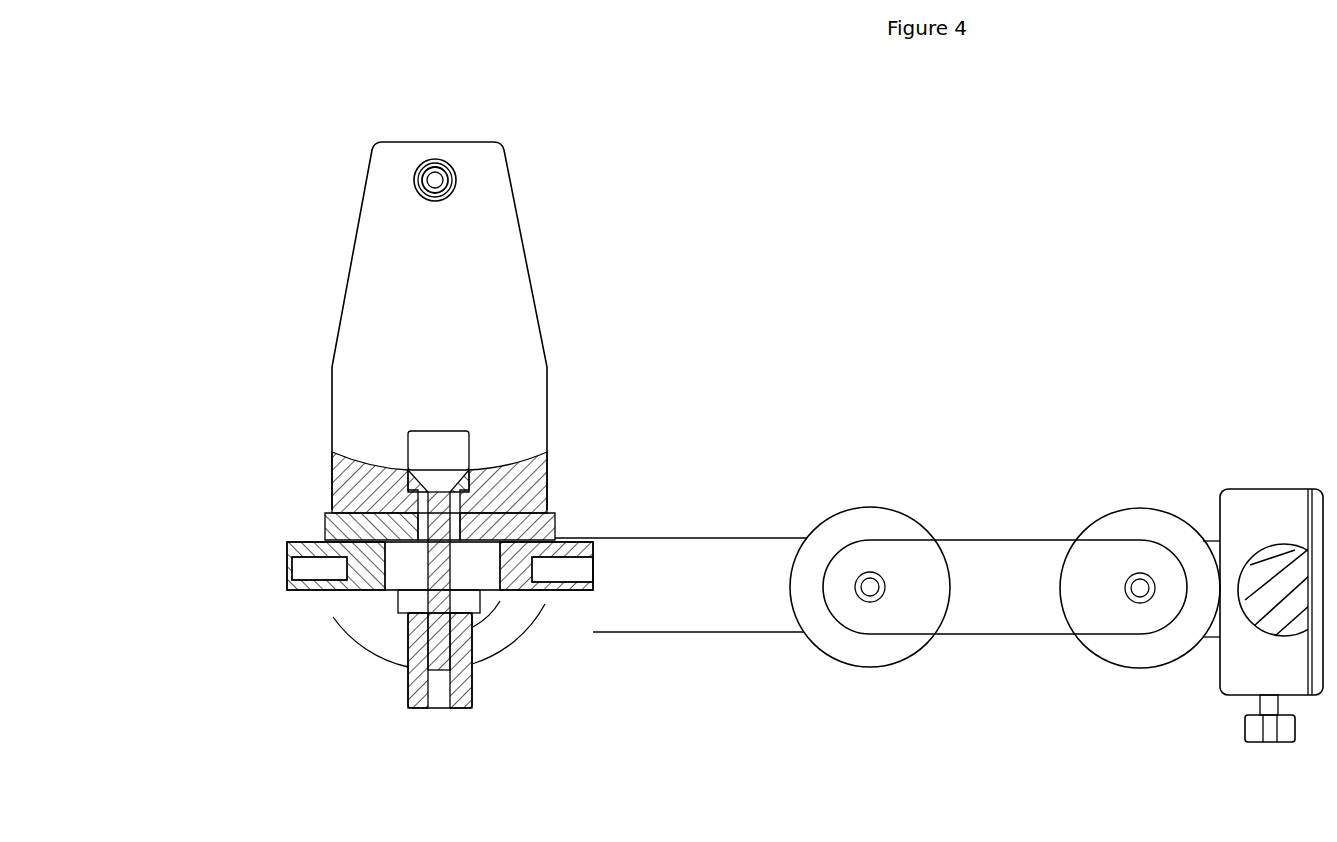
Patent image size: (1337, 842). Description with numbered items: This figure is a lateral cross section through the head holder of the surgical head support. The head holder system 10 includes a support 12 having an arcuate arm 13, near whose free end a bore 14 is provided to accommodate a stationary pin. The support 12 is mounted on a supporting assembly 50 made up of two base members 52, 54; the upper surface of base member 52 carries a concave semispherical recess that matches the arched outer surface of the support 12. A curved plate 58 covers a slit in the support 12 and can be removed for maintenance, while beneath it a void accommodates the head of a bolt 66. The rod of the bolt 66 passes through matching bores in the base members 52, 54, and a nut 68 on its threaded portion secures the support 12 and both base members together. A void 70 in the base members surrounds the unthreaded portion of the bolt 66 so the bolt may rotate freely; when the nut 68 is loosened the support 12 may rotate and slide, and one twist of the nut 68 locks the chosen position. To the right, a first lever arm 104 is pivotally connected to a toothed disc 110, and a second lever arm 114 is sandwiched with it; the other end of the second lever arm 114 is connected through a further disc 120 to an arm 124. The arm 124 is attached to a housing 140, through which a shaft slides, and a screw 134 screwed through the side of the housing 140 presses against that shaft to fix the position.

The head holder system 10 is at (627, 308).
The support 12 is at (357, 445).
The arcuate arm 13 is at (508, 253).
The bore 14 is at (447, 167).
The supporting assembly 50 is at (333, 667).
The base member 52 is at (540, 530).
The base member 54 is at (505, 597).
The curved plate 58 is at (453, 453).
The bolt 66 is at (435, 513).
The nut 68 is at (415, 672).
The void 70 is at (407, 577).
The first lever arm 104 is at (701, 605).
The disc 110 is at (872, 655).
The second lever arm 114 is at (988, 553).
The disc 120 is at (1137, 520).
The arm 124 is at (1210, 632).
The screw 134 is at (1283, 735).
The housing 140 is at (1258, 500).